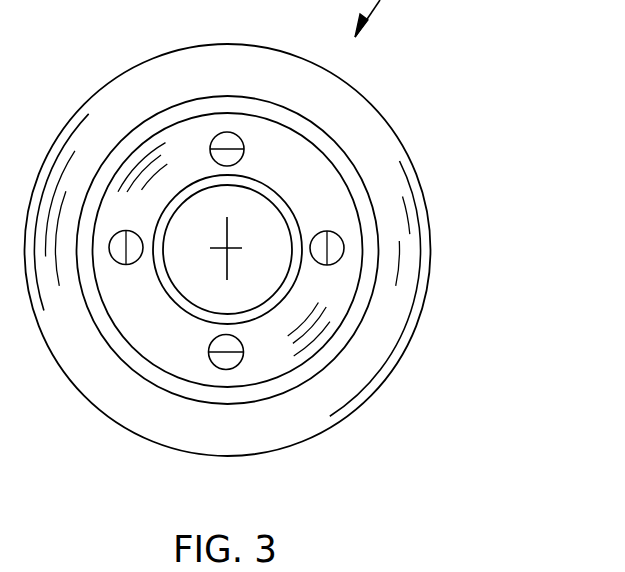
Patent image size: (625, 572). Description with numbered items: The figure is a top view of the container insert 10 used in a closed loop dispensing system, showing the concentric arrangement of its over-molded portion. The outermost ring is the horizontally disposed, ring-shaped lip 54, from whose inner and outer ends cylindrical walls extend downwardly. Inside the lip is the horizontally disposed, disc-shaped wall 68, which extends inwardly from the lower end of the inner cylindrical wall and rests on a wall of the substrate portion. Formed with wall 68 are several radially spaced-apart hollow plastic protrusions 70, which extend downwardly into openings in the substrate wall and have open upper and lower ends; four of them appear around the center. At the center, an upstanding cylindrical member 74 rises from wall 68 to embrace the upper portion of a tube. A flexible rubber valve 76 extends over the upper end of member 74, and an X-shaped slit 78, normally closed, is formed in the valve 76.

The lip 54 is at (383, 360).
The disc-shaped wall 68 is at (152, 314).
The hollow plastic protrusions 70 is at (344, 247).
The upstanding cylindrical member 74 is at (183, 333).
The flexible rubber valve 76 is at (210, 283).
The X-shaped slit 78 is at (227, 230).
The container insert 10 is at (485, 571).